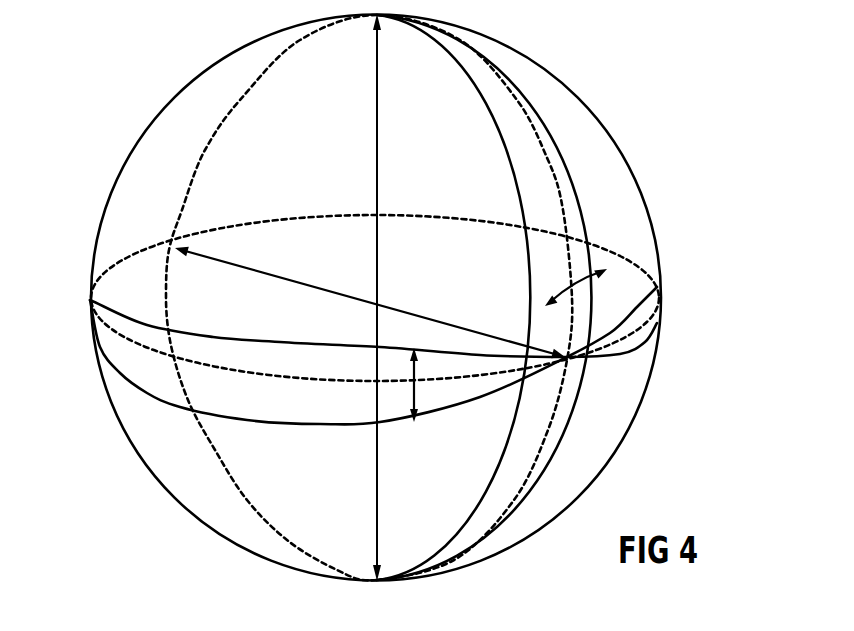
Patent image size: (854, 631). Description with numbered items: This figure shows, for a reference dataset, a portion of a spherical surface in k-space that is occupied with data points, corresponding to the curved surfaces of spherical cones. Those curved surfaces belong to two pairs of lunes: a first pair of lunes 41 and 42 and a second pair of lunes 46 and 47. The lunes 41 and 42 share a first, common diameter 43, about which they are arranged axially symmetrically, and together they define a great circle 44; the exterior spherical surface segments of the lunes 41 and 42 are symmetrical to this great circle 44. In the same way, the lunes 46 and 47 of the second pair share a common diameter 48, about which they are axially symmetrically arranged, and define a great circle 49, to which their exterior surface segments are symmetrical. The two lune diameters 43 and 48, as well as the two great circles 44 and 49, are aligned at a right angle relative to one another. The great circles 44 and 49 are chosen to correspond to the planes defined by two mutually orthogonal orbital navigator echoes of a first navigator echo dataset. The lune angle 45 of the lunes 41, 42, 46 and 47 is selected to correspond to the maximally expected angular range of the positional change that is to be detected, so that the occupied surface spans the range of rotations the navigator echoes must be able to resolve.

The lune 41 is at (143, 363).
The lune 42 is at (660, 321).
The common diameter 43 is at (322, 285).
The great circle 44 is at (227, 375).
The lune angle 45 is at (415, 380).
The lune 46 is at (523, 100).
The lune 47 is at (200, 75).
The common diameter 48 is at (380, 150).
The great circle 49 is at (545, 155).